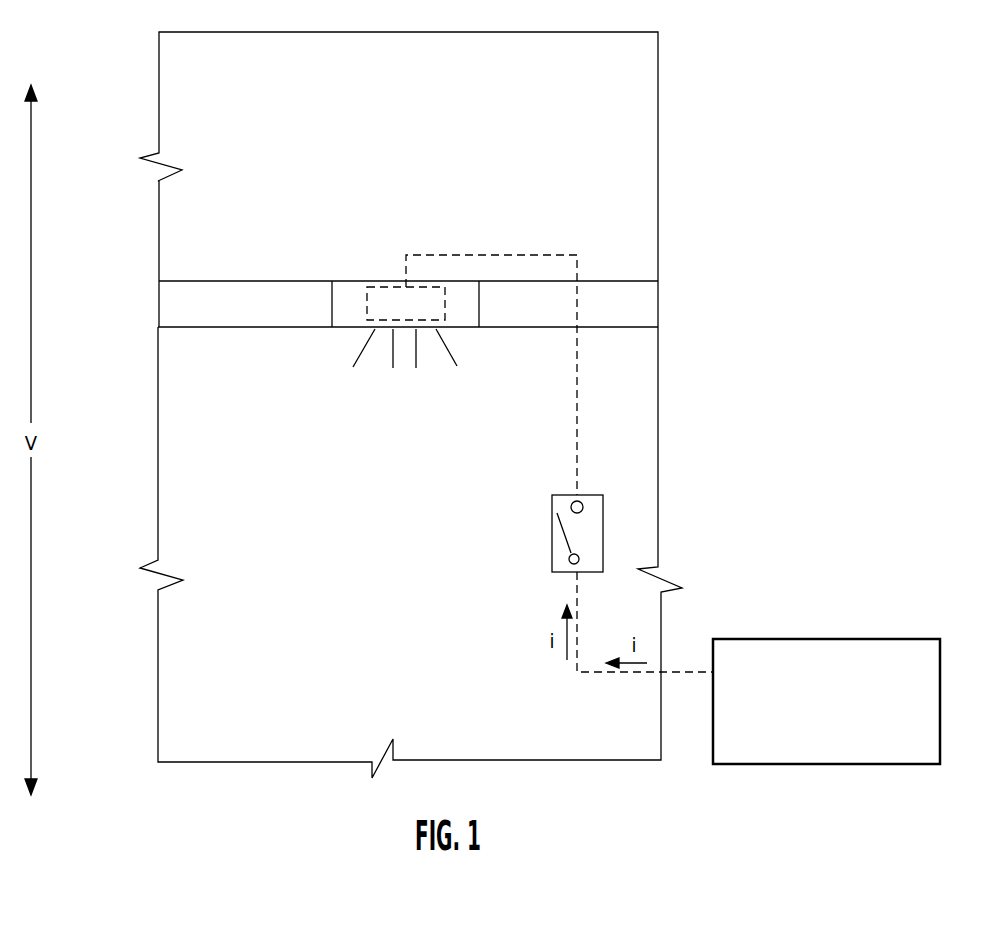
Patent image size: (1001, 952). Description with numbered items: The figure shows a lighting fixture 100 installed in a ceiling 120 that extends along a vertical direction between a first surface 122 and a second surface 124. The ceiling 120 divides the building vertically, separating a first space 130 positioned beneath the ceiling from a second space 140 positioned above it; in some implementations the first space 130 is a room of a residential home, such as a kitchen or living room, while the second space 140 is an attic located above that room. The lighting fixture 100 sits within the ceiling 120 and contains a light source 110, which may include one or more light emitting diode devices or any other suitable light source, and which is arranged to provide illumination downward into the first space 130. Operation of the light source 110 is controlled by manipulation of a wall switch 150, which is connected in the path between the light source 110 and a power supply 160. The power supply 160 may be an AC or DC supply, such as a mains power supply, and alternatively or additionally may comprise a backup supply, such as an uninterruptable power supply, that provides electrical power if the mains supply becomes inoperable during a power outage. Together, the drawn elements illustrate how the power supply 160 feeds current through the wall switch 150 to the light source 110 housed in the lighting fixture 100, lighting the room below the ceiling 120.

The lighting fixture 100 is at (332, 292).
The light source 110 is at (390, 317).
The ceiling 120 is at (180, 312).
The first surface 122 is at (235, 327).
The second surface 124 is at (232, 281).
The first space 130 is at (408, 685).
The second space 140 is at (402, 80).
The wall switch 150 is at (552, 550).
The power supply 160 is at (811, 710).